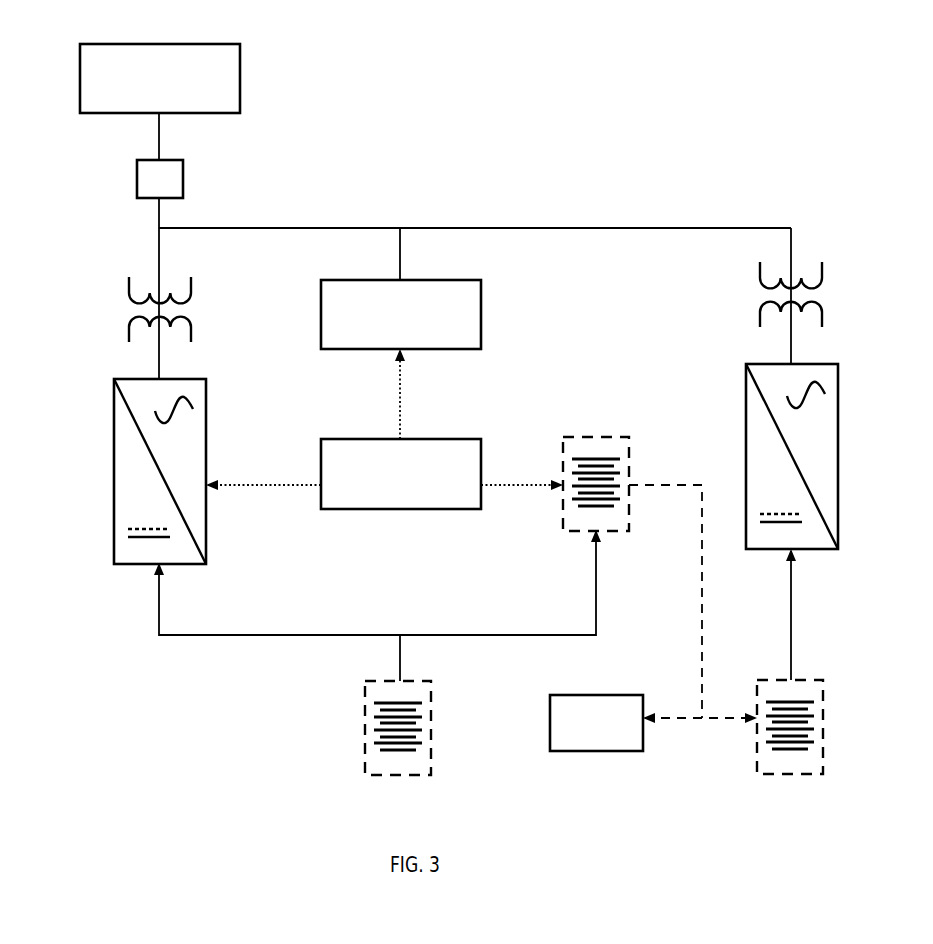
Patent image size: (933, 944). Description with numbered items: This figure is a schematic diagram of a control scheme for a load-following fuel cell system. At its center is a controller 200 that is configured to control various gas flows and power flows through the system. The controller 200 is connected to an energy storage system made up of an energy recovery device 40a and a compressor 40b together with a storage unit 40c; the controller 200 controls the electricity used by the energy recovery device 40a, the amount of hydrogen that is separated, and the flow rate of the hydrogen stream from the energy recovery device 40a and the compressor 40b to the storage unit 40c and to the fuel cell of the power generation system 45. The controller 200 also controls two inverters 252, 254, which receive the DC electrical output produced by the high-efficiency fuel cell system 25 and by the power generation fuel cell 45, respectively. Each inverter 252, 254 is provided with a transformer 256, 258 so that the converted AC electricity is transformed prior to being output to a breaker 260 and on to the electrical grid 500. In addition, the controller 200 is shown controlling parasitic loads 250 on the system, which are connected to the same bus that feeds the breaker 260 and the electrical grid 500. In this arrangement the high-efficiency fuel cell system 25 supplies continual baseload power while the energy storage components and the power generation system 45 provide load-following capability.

The electrical grid 500 is at (144, 89).
The breaker 260 is at (137, 178).
The transformer 256 is at (129, 323).
The transformer 258 is at (822, 316).
The inverter 252 is at (114, 487).
The inverter 254 is at (837, 472).
The parasitic loads 250 is at (384, 325).
The controller 200 is at (384, 485).
The energy recovery device 40a is at (595, 445).
The compressor 40b is at (595, 437).
The storage unit 40c is at (581, 732).
The high-efficiency fuel cell system 25 is at (365, 735).
The power generation system 45 is at (823, 730).